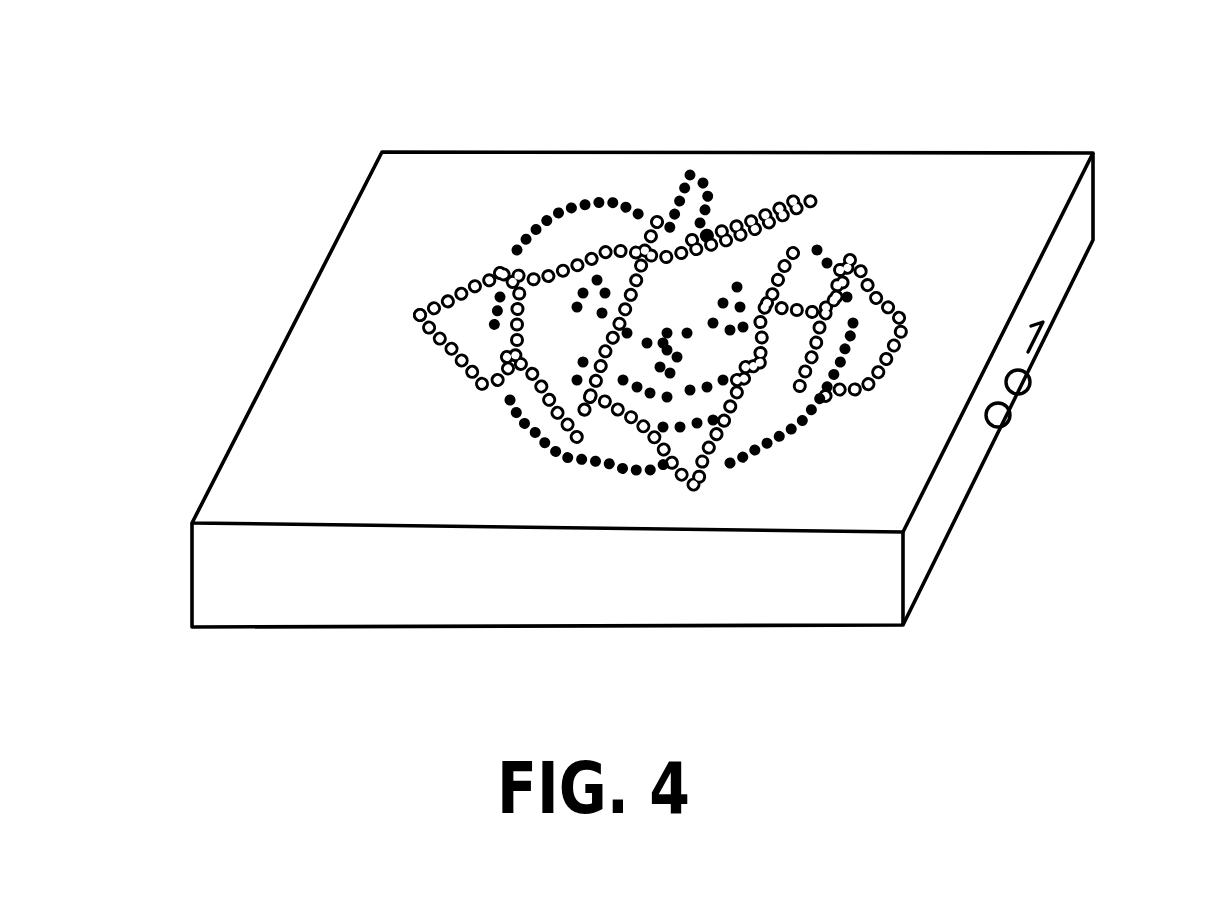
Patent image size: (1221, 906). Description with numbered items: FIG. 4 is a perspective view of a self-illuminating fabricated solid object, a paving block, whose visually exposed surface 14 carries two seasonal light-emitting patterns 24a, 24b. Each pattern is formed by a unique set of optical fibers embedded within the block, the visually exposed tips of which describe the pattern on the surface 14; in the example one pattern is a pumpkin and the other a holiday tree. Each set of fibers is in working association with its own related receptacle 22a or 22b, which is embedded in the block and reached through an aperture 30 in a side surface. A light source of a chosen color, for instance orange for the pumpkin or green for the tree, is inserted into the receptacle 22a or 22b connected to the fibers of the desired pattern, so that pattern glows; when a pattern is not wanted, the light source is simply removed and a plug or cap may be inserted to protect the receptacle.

The visually exposed surface 14 is at (972, 197).
The seasonal pattern 24a is at (445, 300).
The seasonal pattern 24b is at (718, 184).
The receptacle 22a is at (1003, 483).
The receptacle 22b is at (1030, 380).
The aperture 30 is at (1040, 360).